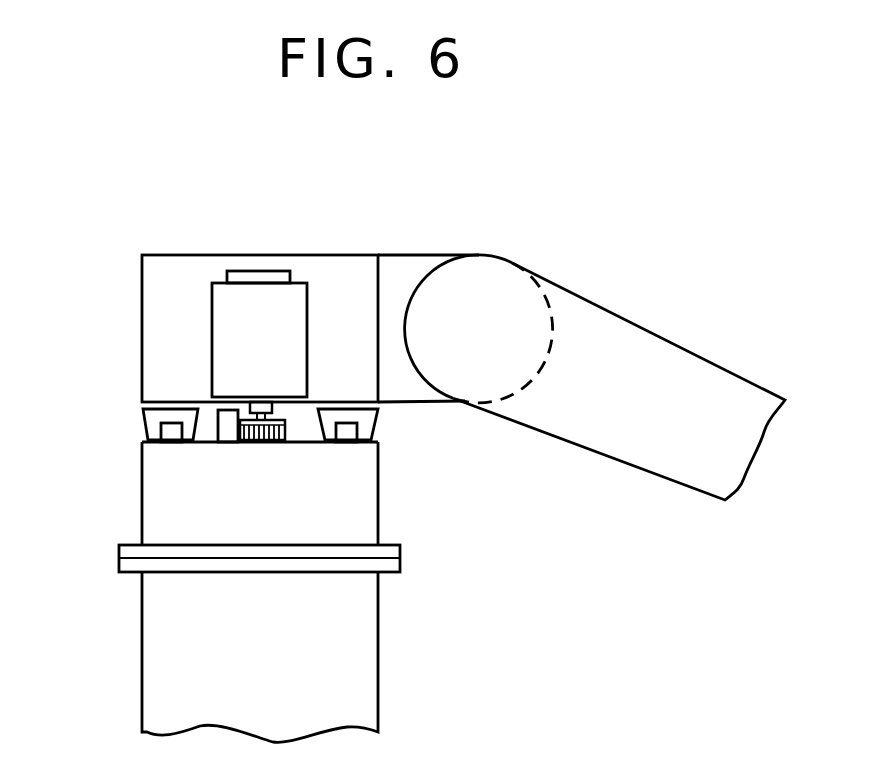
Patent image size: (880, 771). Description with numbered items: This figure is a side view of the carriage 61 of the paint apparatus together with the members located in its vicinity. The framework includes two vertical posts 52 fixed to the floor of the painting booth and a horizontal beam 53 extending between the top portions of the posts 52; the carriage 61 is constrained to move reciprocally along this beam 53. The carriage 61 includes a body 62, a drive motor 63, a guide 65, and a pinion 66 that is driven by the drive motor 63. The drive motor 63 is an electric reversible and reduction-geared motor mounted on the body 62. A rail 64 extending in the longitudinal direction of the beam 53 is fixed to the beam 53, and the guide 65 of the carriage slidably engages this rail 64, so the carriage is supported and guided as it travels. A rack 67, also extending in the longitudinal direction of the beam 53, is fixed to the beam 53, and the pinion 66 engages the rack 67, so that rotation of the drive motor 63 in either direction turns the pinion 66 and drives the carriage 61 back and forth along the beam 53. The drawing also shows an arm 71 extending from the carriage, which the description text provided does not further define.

The vertical post 52 is at (142, 642).
The horizontal beam 53 is at (140, 493).
The carriage 61 is at (134, 326).
The body 62 is at (359, 272).
The drive motor 63 is at (212, 315).
The rail 64 is at (173, 438).
The guide 65 is at (155, 418).
The pinion 66 is at (285, 428).
The rack 67 is at (223, 444).
The arm 71 is at (552, 413).